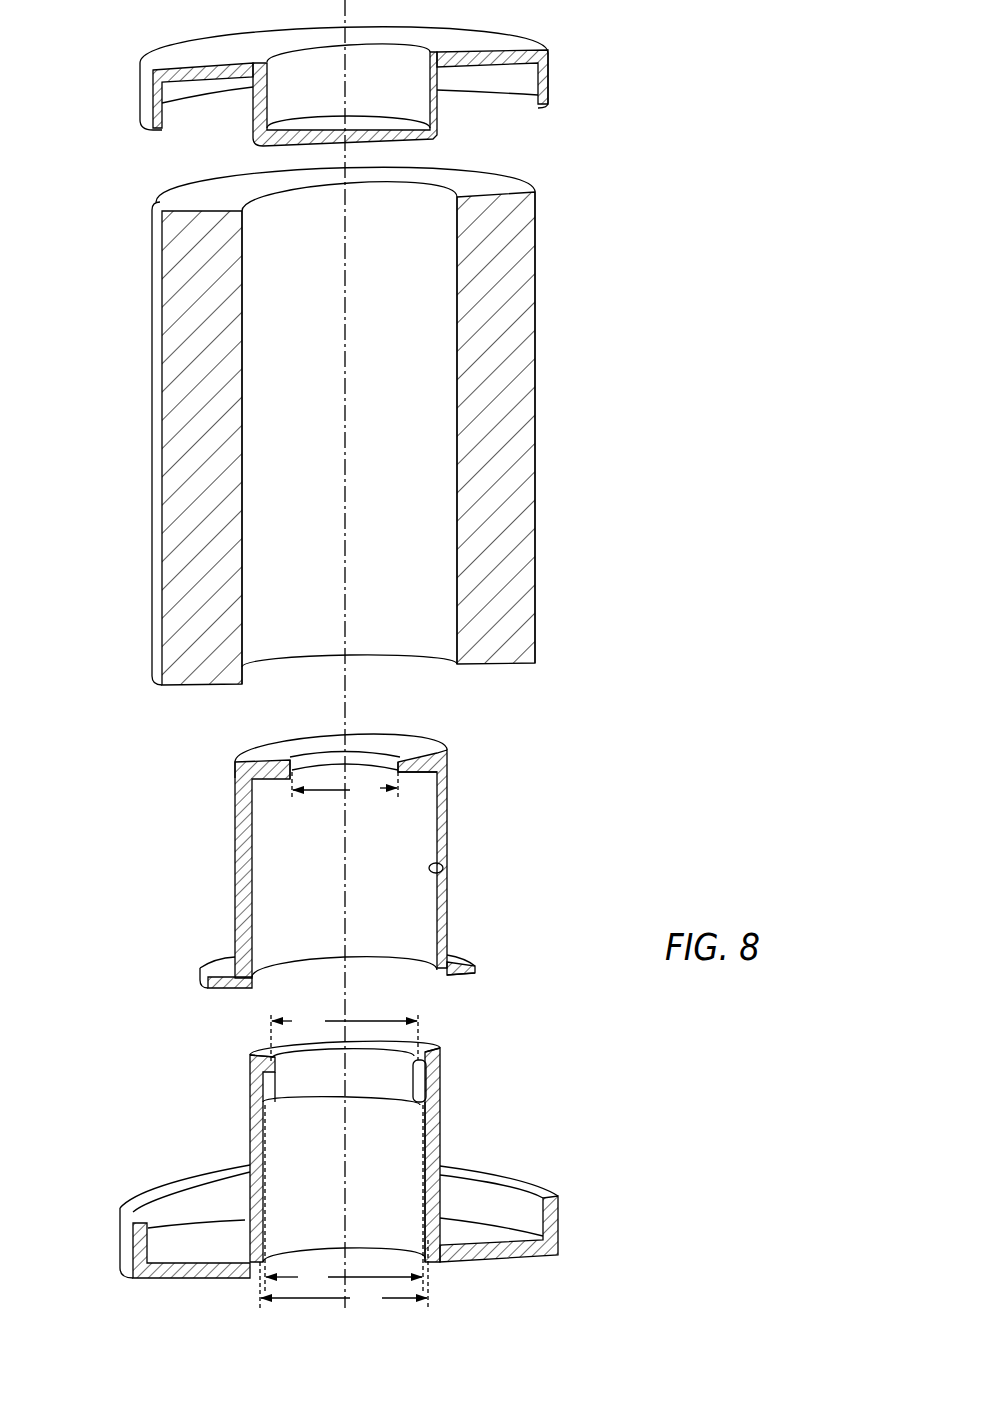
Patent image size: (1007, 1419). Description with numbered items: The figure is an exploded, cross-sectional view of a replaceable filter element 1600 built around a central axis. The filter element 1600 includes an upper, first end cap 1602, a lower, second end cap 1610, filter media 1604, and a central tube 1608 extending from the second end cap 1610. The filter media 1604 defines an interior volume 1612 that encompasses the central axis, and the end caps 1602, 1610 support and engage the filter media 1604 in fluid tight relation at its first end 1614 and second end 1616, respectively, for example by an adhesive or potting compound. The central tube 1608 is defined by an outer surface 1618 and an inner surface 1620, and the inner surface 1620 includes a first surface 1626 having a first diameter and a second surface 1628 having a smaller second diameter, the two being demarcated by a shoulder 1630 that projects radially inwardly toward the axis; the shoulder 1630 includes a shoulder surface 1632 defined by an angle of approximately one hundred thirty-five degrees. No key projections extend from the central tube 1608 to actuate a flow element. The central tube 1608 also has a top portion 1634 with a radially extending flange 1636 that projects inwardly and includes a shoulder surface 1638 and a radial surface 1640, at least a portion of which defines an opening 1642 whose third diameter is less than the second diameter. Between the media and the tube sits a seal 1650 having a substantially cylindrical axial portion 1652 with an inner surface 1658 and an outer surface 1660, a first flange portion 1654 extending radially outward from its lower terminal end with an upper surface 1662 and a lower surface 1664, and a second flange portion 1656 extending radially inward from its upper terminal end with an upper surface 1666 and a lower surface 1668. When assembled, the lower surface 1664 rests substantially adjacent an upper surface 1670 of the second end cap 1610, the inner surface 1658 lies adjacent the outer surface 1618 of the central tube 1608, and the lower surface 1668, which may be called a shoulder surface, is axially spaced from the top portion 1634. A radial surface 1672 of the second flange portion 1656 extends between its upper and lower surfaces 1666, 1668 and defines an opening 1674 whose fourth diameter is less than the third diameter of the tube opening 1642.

The filter element 1600 is at (79, 28).
The first end cap 1602 is at (573, 68).
The filter media 1604 is at (408, 417).
The interior volume 1612 is at (403, 343).
The first end 1614 is at (483, 185).
The second end 1616 is at (518, 665).
The seal 1650 is at (356, 845).
The substantially cylindrical axial portion 1652 is at (228, 878).
The first flange portion 1654 is at (200, 975).
The second flange portion 1656 is at (232, 768).
The inner surface 1658 is at (443, 876).
The outer surface 1660 is at (447, 822).
The upper surface 1662 is at (452, 957).
The lower surface 1664 is at (458, 965).
The upper surface 1666 is at (412, 758).
The lower surface 1668 is at (413, 774).
The radial surface 1672 is at (293, 760).
The opening 1674 is at (364, 757).
The central tube 1608 is at (370, 1155).
The second end cap 1610 is at (398, 1246).
The outer surface 1618 is at (443, 1150).
The inner surface 1620 is at (413, 1238).
The first surface 1626 is at (420, 1180).
The second surface 1628 is at (411, 1094).
The shoulder 1630 is at (318, 1100).
The shoulder surface 1632 is at (262, 1117).
The top portion 1634 is at (255, 1035).
The radially extending flange 1636 is at (258, 1066).
The shoulder surface 1638 is at (425, 1066).
The radial surface 1640 is at (410, 1050).
The opening 1642 is at (366, 1040).
The upper surface 1670 is at (210, 1253).